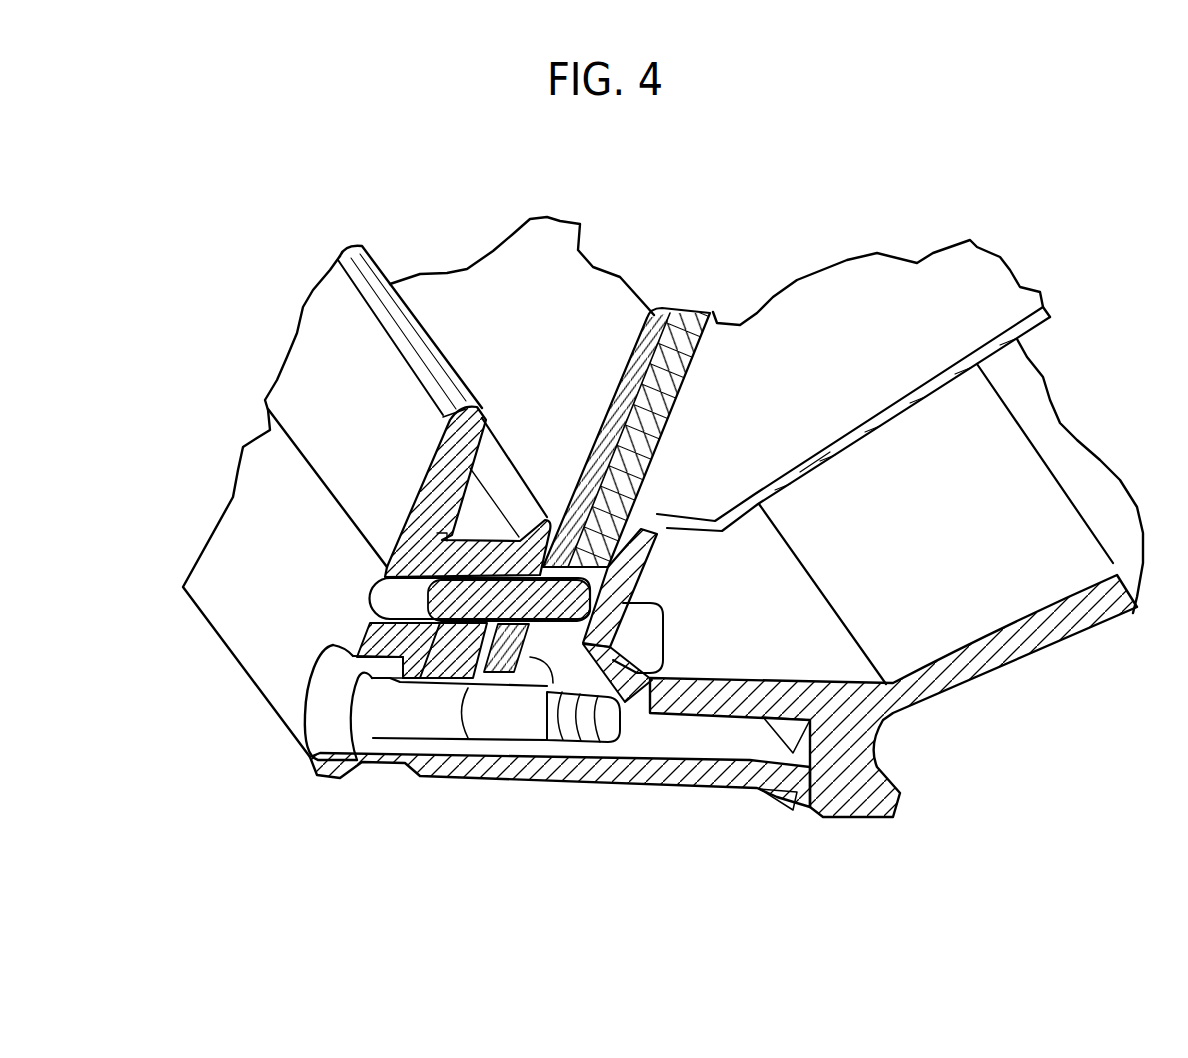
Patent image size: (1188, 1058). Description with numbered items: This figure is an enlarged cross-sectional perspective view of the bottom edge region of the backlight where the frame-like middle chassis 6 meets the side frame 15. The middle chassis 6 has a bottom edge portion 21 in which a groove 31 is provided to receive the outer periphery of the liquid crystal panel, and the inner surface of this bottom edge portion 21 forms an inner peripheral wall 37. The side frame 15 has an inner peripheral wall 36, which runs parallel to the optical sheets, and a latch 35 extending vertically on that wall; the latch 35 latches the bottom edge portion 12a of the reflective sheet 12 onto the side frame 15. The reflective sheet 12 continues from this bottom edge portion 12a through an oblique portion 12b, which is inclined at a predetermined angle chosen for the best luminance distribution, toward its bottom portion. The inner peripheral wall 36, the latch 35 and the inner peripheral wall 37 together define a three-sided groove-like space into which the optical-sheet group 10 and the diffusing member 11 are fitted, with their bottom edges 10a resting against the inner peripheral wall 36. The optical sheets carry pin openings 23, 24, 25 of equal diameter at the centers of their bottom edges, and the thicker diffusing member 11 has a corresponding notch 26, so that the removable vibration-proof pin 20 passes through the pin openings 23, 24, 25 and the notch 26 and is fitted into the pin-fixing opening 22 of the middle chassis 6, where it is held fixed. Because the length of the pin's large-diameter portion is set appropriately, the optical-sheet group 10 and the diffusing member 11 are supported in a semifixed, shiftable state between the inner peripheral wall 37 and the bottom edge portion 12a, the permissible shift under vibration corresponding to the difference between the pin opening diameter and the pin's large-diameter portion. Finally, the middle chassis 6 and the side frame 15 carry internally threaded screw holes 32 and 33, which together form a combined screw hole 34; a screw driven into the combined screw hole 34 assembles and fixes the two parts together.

The middle chassis 6 is at (723, 783).
The optical-sheet group 10 is at (643, 340).
The bottom edges 10a is at (500, 660).
The diffusing member 11 is at (693, 343).
The reflective sheet 12 is at (863, 350).
The bottom edge portion 12a is at (623, 603).
The oblique portion 12b is at (817, 460).
The side frame 15 is at (857, 730).
The vibration-proof pin 20 is at (403, 715).
The bottom edge portion 21 is at (347, 364).
The pin-fixing opening 22 is at (393, 595).
The pin opening 23 is at (647, 433).
The pin opening 24 is at (647, 433).
The pin opening 25 is at (647, 433).
The notch 26 is at (557, 632).
The groove 31 is at (493, 527).
The screw hole 32 is at (443, 720).
The screw hole 33 is at (495, 722).
The combined screw hole 34 is at (502, 873).
The latch 35 is at (650, 660).
The inner peripheral wall 36 is at (533, 658).
The inner peripheral wall 37 is at (560, 515).